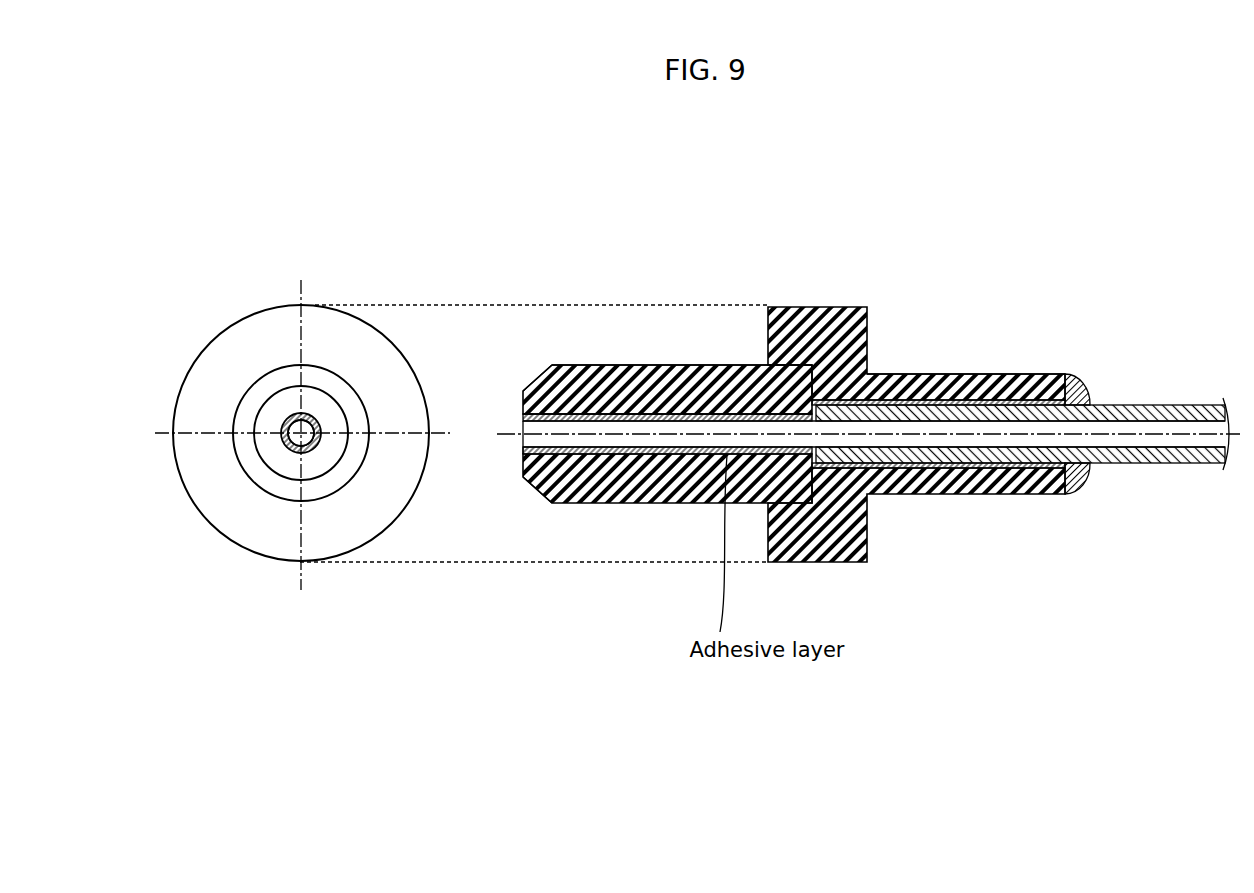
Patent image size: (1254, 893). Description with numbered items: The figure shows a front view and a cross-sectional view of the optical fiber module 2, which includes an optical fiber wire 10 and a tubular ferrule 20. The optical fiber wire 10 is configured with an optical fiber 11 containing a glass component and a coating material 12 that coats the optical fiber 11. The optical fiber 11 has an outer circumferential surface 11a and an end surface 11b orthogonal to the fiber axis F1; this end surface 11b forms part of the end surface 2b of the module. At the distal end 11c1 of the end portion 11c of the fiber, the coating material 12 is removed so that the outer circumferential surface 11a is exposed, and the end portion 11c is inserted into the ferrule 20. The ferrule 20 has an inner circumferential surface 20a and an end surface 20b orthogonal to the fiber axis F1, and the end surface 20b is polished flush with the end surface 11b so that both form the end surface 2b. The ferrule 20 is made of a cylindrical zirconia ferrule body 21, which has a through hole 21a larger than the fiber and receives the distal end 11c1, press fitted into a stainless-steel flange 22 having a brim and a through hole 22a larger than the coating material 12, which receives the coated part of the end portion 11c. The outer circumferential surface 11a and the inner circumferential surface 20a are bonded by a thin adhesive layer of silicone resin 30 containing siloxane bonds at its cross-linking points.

The optical fiber module 2 is at (305, 155).
The end surface of optical fiber module 2b is at (313, 420).
The optical fiber wire 10 is at (1182, 258).
The optical fiber 11 is at (313, 447).
The outer circumferential surface 11a is at (572, 460).
The end surface of optical fiber 11b is at (292, 450).
The end portion of optical fiber 11c is at (542, 696).
The distal end 11c1 is at (863, 660).
The coating material 12 is at (1165, 405).
The ferrule 20 is at (182, 232).
The inner circumferential surface 20a is at (593, 414).
The end surface of ferrule 20b is at (307, 400).
The ferrule body 21 is at (245, 398).
The through hole 21a is at (647, 414).
The flange 22 is at (251, 313).
The through hole 22a is at (922, 374).
The silicone resin 30 is at (303, 450).
The fiber axis F1 is at (996, 434).